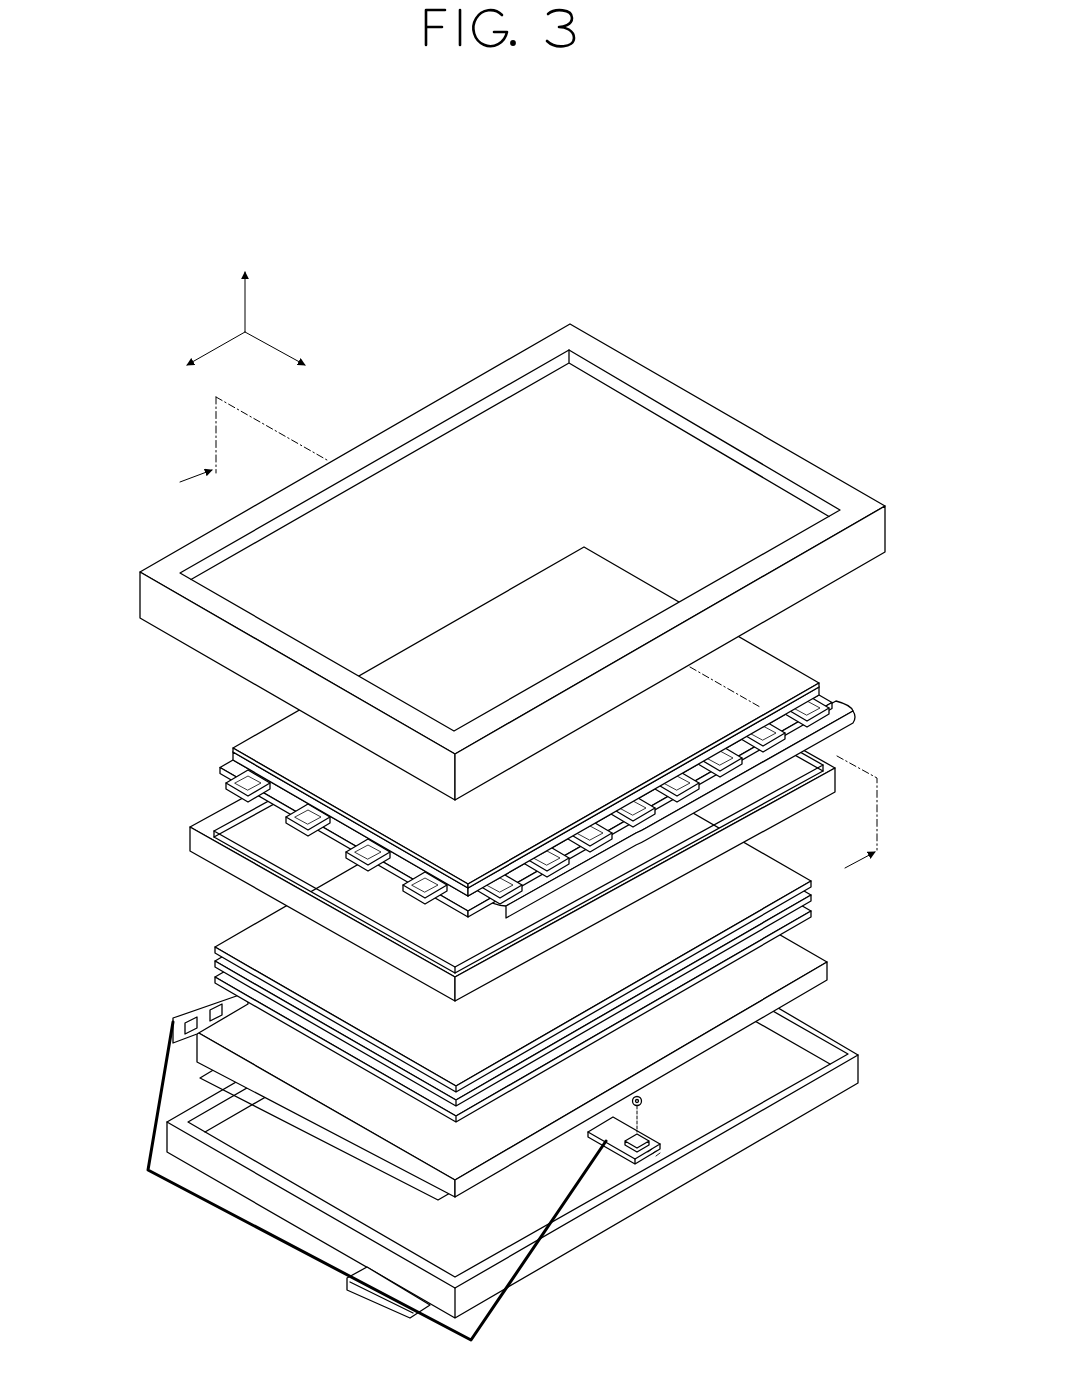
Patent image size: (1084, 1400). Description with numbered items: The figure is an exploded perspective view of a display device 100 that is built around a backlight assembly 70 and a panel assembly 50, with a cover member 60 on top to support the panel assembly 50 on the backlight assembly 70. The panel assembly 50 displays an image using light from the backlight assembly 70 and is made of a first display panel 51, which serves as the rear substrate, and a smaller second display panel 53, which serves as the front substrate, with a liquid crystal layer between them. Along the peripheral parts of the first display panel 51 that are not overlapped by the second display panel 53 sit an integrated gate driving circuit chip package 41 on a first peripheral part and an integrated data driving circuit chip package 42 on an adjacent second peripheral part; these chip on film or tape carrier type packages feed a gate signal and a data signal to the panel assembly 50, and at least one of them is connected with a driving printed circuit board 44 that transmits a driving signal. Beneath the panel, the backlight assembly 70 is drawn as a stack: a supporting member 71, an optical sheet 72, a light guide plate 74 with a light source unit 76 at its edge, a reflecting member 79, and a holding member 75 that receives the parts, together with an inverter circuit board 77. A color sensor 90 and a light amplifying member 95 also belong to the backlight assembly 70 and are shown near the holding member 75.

The display device 100 is at (502, 788).
The cover member 60 is at (740, 420).
The panel assembly 50 is at (565, 721).
The second display panel 53 is at (783, 660).
The first display panel 51 is at (827, 680).
The integrated data driving circuit chip package 42 is at (835, 700).
The integrated gate driving circuit chip package 41 is at (233, 786).
The driving printed circuit board 44 is at (858, 724).
The backlight assembly 70 is at (449, 979).
The supporting member 71 is at (187, 843).
The optical sheet 72 is at (213, 978).
The light source unit 76 is at (173, 1010).
The light guide plate 74 is at (190, 1055).
The reflecting member 79 is at (213, 1089).
The holding member 75 is at (165, 1143).
The inverter circuit board 77 is at (345, 1285).
The color sensor 90 is at (650, 1166).
The light amplifying member 95 is at (645, 1105).